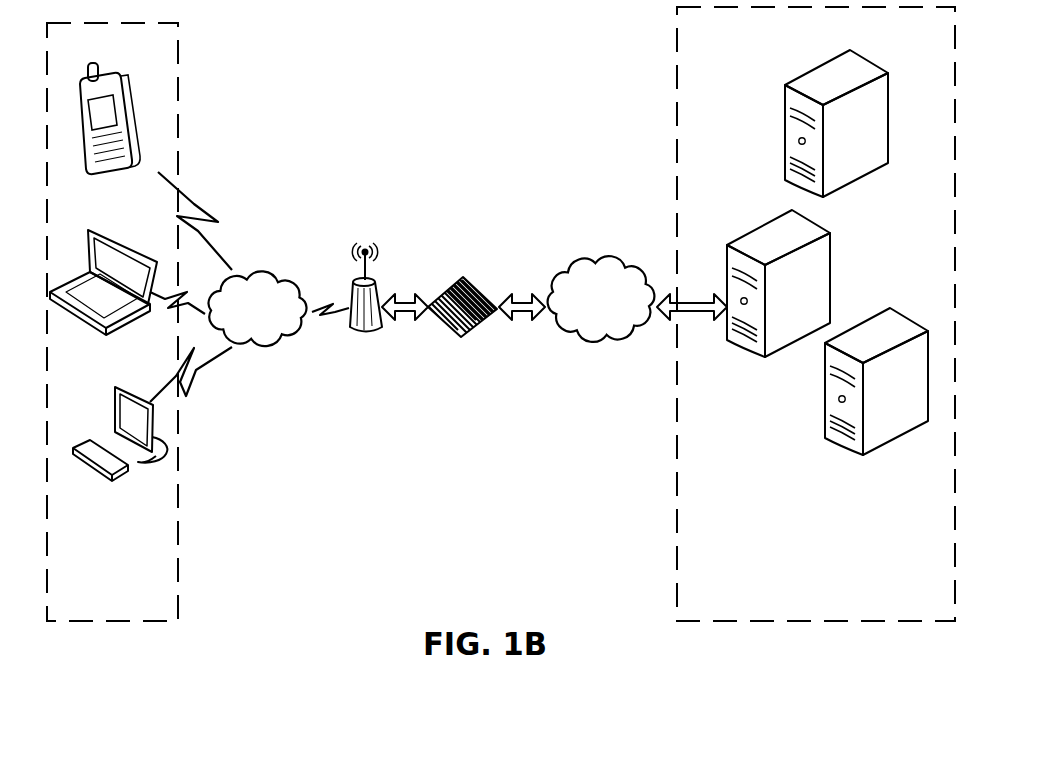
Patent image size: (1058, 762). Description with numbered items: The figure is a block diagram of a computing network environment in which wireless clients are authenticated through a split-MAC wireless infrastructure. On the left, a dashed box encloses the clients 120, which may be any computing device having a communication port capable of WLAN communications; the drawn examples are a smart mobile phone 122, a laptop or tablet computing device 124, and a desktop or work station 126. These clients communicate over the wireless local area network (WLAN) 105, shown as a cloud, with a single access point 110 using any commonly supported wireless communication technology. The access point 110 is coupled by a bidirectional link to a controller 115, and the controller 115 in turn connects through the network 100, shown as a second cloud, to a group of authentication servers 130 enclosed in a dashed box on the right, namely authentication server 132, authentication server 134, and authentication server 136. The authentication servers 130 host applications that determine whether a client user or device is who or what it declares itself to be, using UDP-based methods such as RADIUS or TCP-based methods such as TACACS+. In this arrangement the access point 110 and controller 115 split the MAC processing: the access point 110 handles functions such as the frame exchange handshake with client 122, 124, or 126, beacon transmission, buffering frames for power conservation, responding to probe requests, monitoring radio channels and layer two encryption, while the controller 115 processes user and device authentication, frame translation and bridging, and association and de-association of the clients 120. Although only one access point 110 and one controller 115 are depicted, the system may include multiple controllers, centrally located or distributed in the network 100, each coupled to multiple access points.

The network 100 is at (618, 286).
The wireless local area network (WLAN) 105 is at (233, 303).
The access point 110 is at (380, 363).
The controller 115 is at (448, 363).
The clients 120 is at (140, 566).
The smart mobile phone 122 is at (87, 200).
The laptop or tablet computing device 124 is at (132, 356).
The desktop or work station 126 is at (140, 501).
The authentication servers 130 is at (797, 560).
The authentication server 132 is at (818, 104).
The authentication server 134 is at (760, 273).
The authentication server 136 is at (879, 359).